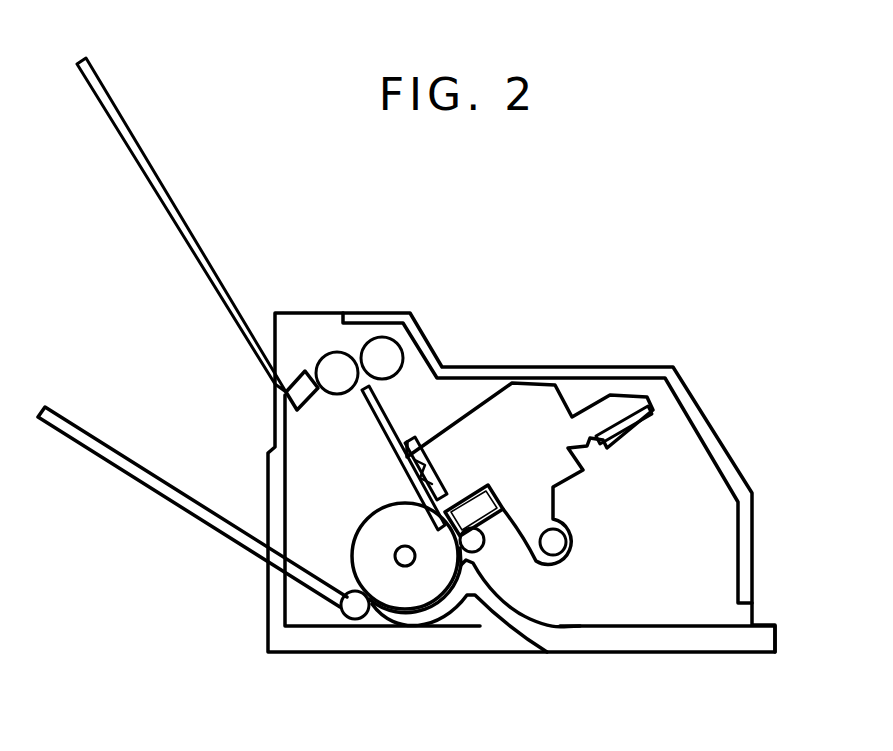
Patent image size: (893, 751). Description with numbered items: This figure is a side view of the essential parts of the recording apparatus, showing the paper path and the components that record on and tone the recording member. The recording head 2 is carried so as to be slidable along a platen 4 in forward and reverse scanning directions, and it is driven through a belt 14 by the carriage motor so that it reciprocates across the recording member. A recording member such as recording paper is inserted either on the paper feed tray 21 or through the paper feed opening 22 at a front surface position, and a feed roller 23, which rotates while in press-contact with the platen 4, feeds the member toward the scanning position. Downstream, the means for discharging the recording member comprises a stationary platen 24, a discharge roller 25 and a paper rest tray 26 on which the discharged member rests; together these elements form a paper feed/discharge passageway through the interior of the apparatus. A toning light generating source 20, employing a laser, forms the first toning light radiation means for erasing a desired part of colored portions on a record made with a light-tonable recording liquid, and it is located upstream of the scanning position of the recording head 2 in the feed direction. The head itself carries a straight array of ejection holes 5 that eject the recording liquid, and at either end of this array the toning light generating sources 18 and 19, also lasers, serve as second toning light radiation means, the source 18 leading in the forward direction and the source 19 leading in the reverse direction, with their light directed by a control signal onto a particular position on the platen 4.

The recording head 2 is at (553, 410).
The platen 4 is at (362, 524).
The ejection holes 5 is at (437, 470).
The belt 14 is at (623, 436).
The toning light generating source 18 is at (424, 373).
The toning light generating source 19 is at (417, 440).
The toning light generating source 20 is at (493, 508).
The paper feed tray 21 is at (95, 453).
The paper feed opening 22 is at (757, 612).
The feed roller 23 is at (483, 543).
The stationary platen 24 is at (392, 440).
The discharge roller 25 is at (328, 352).
The paper rest tray 26 is at (161, 176).